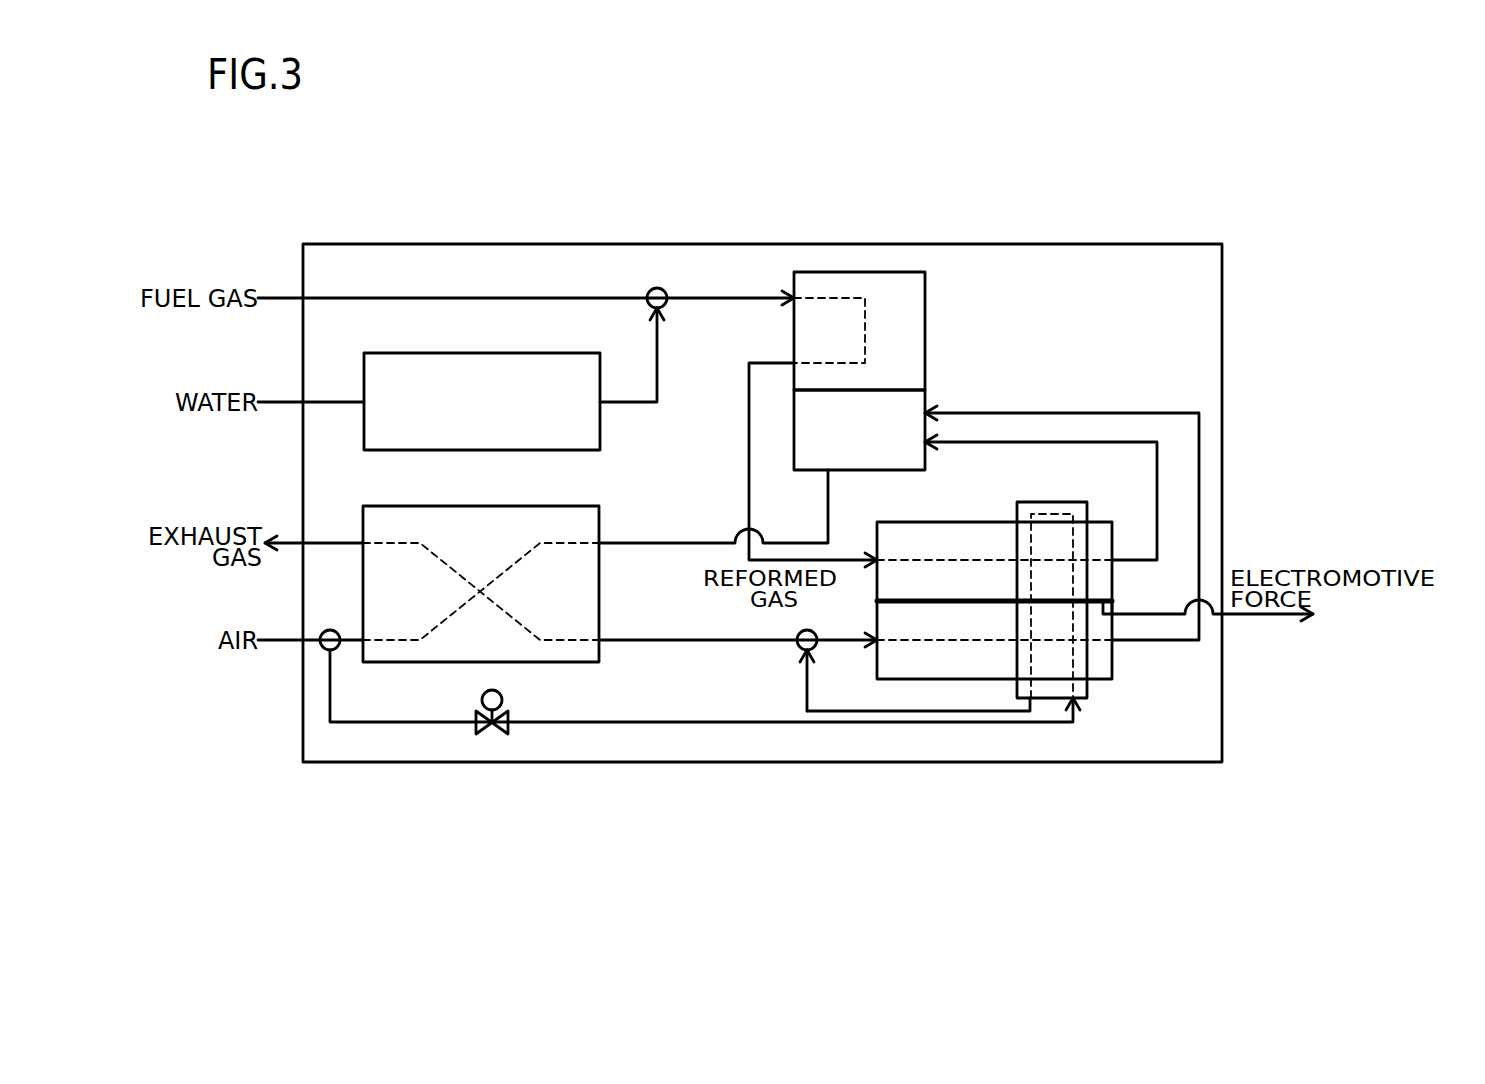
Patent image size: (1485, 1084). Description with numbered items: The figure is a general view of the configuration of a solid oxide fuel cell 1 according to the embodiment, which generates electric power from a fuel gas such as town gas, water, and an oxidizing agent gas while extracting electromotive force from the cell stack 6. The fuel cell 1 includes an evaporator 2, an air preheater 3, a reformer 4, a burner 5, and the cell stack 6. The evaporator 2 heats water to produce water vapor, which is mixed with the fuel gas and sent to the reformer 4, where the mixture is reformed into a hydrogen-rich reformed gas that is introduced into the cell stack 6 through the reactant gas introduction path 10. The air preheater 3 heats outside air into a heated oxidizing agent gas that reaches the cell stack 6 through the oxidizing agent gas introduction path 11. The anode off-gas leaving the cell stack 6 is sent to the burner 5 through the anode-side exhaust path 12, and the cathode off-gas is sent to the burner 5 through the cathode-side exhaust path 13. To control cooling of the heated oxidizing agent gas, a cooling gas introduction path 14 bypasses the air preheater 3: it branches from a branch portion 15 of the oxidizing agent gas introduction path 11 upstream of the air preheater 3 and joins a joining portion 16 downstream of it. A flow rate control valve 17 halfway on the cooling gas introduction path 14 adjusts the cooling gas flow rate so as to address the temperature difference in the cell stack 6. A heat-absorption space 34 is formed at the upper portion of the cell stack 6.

The solid oxide fuel cell 1 is at (828, 206).
The evaporator 2 is at (600, 440).
The air preheater 3 is at (599, 597).
The reformer 4 is at (925, 315).
The burner 5 is at (897, 470).
The cell stack 6 is at (1098, 680).
The reactant gas introduction path 10 is at (749, 480).
The oxidizing agent gas introduction path 11 is at (655, 642).
The anode-side exhaust path 12 is at (1157, 481).
The cathode-side exhaust path 13 is at (1087, 413).
The cooling gas introduction path 14 is at (838, 710).
The branch portion 15 is at (330, 628).
The joining portion 16 is at (798, 648).
The flow rate control valve 17 is at (502, 697).
The heat-absorption space 34 is at (1050, 502).